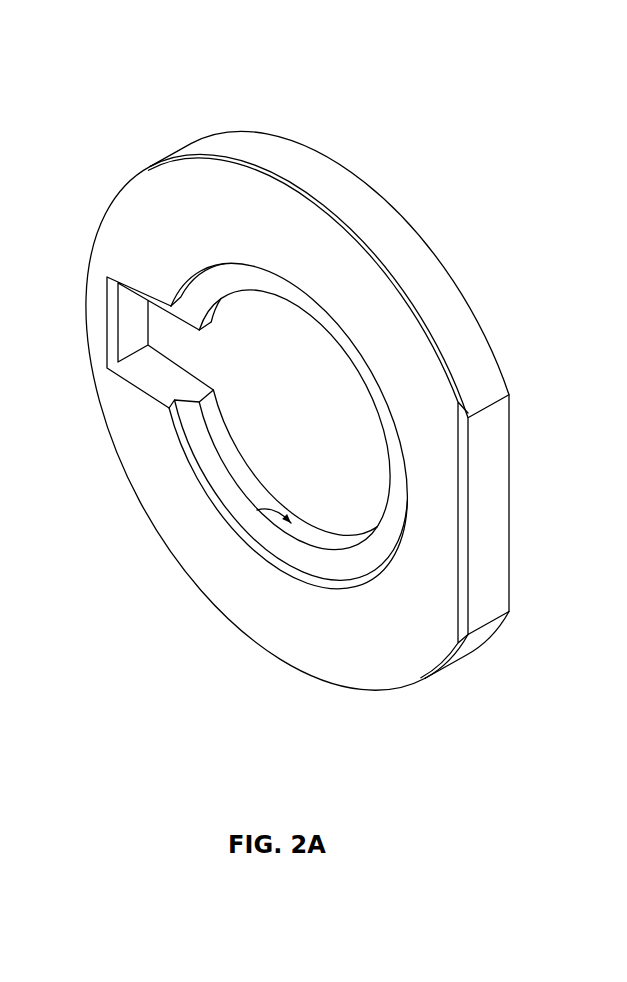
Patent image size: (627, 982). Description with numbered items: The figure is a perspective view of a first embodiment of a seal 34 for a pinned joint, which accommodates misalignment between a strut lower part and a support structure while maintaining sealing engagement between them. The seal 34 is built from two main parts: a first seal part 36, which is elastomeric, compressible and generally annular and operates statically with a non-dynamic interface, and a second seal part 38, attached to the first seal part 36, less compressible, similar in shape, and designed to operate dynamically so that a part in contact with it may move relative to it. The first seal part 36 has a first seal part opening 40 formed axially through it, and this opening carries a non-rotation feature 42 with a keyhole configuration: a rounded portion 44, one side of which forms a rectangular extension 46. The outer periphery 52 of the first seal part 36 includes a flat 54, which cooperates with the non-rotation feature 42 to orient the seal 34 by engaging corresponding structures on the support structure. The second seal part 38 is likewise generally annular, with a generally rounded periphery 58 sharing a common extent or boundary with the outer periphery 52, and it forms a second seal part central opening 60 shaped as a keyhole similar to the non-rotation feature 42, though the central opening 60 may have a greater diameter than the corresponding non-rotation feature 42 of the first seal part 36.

The seal 34 is at (413, 197).
The first seal part 36 is at (452, 307).
The second seal part 38 is at (425, 397).
The first seal part opening 40 is at (300, 420).
The non-rotation feature 42 is at (267, 493).
The rounded portion 44 is at (218, 418).
The rectangular extension 46 is at (177, 373).
The outer periphery 52 is at (423, 257).
The flat 54 is at (493, 512).
The rounded periphery 58 is at (325, 208).
The second seal part central opening 60 is at (243, 517).